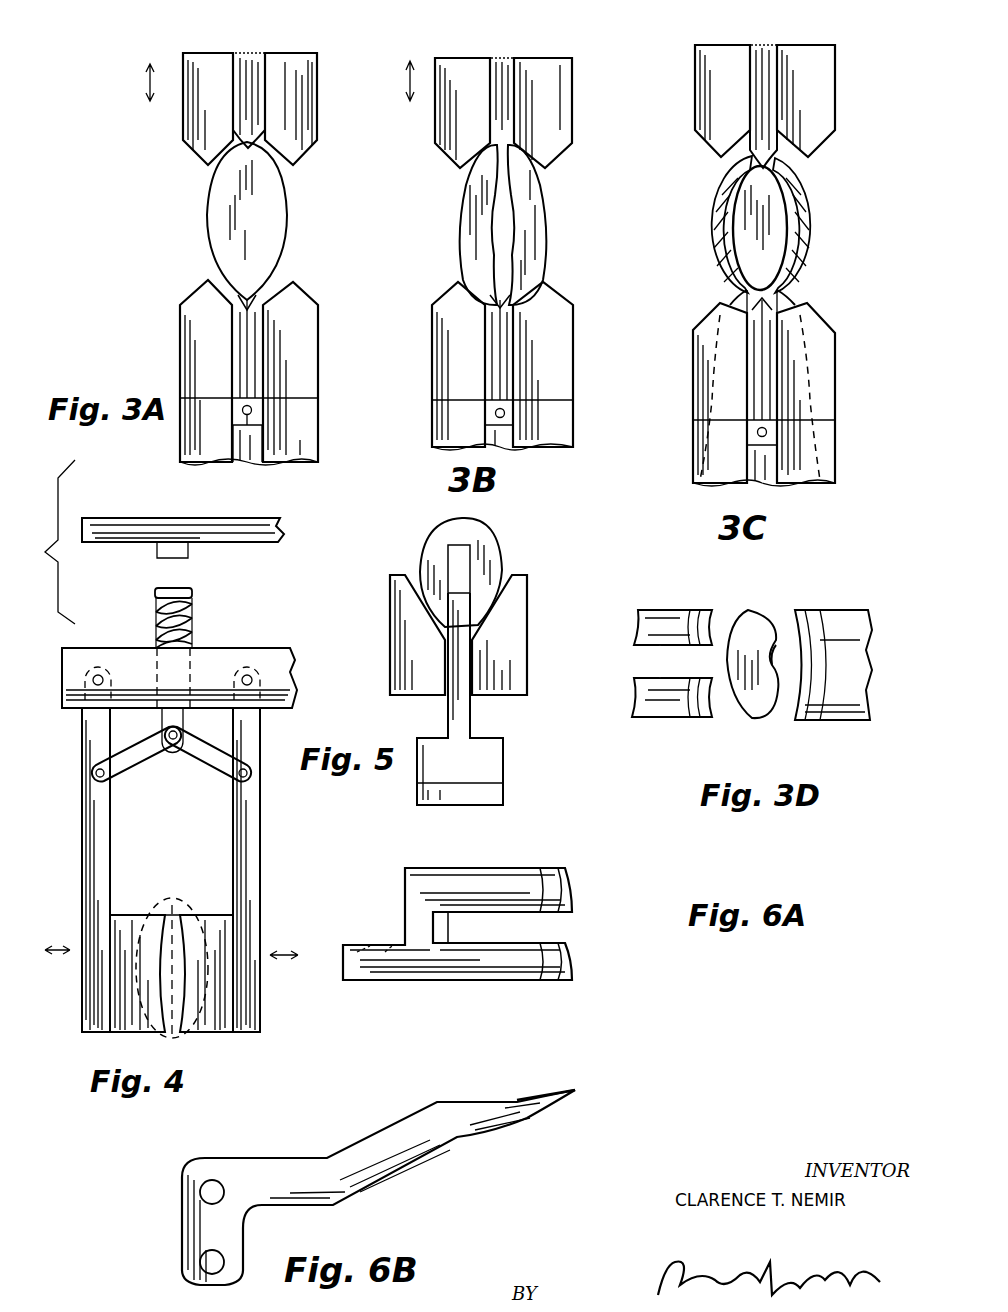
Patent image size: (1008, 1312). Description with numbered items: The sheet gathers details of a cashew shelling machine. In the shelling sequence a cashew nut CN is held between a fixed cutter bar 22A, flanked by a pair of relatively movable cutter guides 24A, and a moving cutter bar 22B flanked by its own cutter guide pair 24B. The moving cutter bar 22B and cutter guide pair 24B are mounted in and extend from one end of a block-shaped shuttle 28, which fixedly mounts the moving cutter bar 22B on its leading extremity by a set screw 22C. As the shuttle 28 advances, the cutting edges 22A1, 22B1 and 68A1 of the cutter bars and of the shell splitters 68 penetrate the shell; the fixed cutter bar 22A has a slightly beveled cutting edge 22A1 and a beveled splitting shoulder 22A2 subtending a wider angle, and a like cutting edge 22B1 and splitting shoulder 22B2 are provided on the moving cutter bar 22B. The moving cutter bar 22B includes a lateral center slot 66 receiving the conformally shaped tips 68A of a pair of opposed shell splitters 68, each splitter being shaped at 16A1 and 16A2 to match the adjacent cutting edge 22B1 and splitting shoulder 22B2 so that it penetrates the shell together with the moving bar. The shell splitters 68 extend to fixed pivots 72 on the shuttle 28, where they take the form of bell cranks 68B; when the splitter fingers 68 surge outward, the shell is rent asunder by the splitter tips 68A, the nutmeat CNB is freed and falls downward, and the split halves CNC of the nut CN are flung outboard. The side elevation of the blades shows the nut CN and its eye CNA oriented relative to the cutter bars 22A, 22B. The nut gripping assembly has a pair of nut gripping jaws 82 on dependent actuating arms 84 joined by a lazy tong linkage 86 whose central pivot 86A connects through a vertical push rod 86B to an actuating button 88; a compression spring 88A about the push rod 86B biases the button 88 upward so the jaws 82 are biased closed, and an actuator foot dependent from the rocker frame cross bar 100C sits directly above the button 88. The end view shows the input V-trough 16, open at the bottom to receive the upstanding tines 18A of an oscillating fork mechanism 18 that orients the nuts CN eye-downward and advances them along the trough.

In FIG. 3A, the fixed cutter bar 22A is at (251, 66).
In FIG. 3B, the fixed cutter bar 22A is at (503, 70).
In FIG. 3C, the fixed cutter bar 22A is at (775, 148).
In FIG. 3D, the fixed cutter bar 22A is at (850, 622).
In FIG. 3A, the cutter guides 24A is at (227, 104).
In FIG. 3B, the cutter guides 24A is at (484, 106).
In FIG. 3C, the cutter guides 24A is at (742, 107).
In FIG. 3A, the cashew nut CN is at (272, 225).
In FIG. 3B, the cashew nut CN is at (540, 222).
In FIG. 3C, the cashew nut CN is at (793, 232).
In FIG. 4, the cashew nut CN is at (160, 906).
In FIG. 5, the cashew nut CN is at (485, 553).
In FIG. 3D, the cashew nut CN is at (752, 664).
In FIG. 3A, the moving cutter bar 22B is at (247, 368).
In FIG. 3B, the moving cutter bar 22B is at (503, 340).
In FIG. 3C, the moving cutter bar 22B is at (762, 366).
In FIG. 3D, the moving cutter bar 22B is at (655, 620).
In FIG. 6A, the moving cutter bar 22B is at (505, 868).
In FIG. 3A, the cutting edge of splitter 68A1 is at (245, 300).
In FIG. 3A, the cutter guide pair 24B is at (226, 341).
In FIG. 3B, the cutter guide pair 24B is at (482, 344).
In FIG. 3C, the cutter guide pair 24B is at (700, 413).
In FIG. 3A, the shuttle 28 is at (250, 446).
In FIG. 3B, the shuttle 28 is at (505, 446).
In FIG. 3C, the shuttle 28 is at (770, 465).
In FIG. 3C, the split halves CNC is at (718, 238).
In FIG. 3C, the nutmeat CNB is at (783, 250).
In FIG. 3C, the splitter tips 68A is at (740, 312).
In FIG. 6B, the splitter tips 68A is at (564, 1077).
In FIG. 3C, the shell splitters 68 is at (712, 382).
In FIG. 3D, the shell splitters 68 is at (652, 667).
In FIG. 6B, the shell splitters 68 is at (302, 1148).
In FIG. 3C, the set screw 22C is at (766, 436).
In FIG. 6A, the set screw 22C is at (376, 985).
In FIG. 3D, the lateral center slot 66 is at (665, 717).
In FIG. 6A, the lateral center slot 66 is at (506, 931).
In FIG. 3D, the eye of the nut CNA is at (772, 660).
In FIG. 3D, the cutting edge 22A1 is at (812, 655).
In FIG. 3D, the splitting shoulder 22A2 is at (820, 690).
In FIG. 4, the cross bar 100C is at (272, 508).
In FIG. 4, the actuating button 88 is at (160, 590).
In FIG. 4, the compression spring 88A is at (160, 622).
In FIG. 4, the vertical push rod 86B is at (175, 695).
In FIG. 4, the central pivot 86A is at (170, 750).
In FIG. 4, the lazy tong linkage 86 is at (194, 830).
In FIG. 4, the actuating arms 84 is at (97, 834).
In FIG. 4, the nut gripping jaws 82 is at (115, 985).
In FIG. 5, the input V-trough 16 is at (516, 621).
In FIG. 5, the oscillating fork mechanism 18 is at (488, 756).
In FIG. 5, the upstanding tines 18A is at (458, 568).
In FIG. 6A, the cutting edge 22B1 is at (562, 896).
In FIG. 6A, the splitting shoulder 22B2 is at (548, 965).
In FIG. 6B, the fixed pivots 72 is at (206, 1183).
In FIG. 6B, the bell cranks 68B is at (218, 1213).
In FIG. 6B, the conformal splitter portion 16A1 is at (576, 1094).
In FIG. 6B, the conformal splitter portion 16A2 is at (543, 1112).